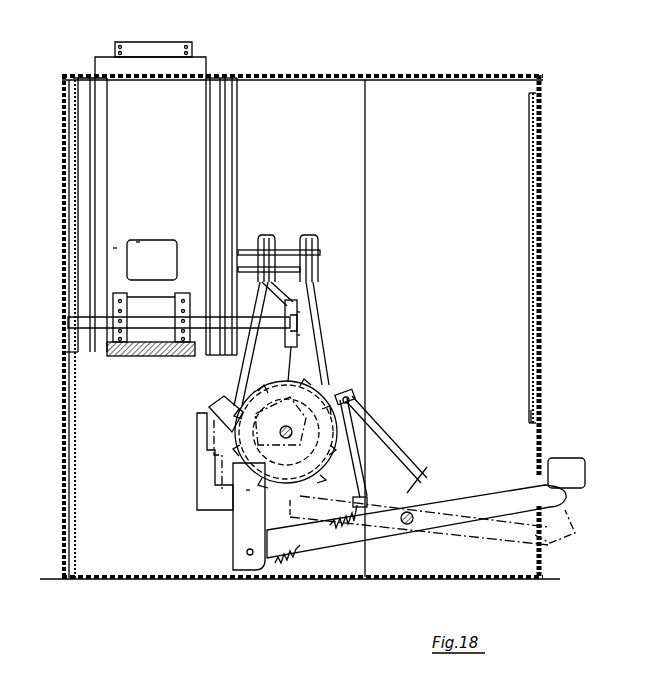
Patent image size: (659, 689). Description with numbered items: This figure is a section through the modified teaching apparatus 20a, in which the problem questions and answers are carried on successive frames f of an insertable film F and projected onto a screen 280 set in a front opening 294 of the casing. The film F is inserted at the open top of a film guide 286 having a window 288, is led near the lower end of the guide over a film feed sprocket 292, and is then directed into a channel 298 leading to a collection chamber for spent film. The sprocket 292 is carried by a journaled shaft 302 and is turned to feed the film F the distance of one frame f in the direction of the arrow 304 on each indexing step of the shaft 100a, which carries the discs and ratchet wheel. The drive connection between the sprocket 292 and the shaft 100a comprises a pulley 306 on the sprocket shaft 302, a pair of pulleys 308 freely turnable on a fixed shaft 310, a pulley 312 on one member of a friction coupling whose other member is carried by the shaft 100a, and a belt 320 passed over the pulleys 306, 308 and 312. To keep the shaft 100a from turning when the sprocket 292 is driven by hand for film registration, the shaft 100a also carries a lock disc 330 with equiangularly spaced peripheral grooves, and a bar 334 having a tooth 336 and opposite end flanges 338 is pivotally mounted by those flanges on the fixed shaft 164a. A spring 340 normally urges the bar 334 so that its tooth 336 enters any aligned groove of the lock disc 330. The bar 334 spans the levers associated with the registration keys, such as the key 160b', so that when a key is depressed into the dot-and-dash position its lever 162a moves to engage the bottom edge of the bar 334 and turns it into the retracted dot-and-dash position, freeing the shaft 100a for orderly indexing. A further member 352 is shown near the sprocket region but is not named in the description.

The modified teaching apparatus 20a is at (443, 63).
The insertable film F is at (196, 47).
The film frame f is at (136, 242).
The film guide 286 is at (168, 109).
The window 288 is at (146, 246).
The arrow 304 is at (115, 270).
The channel 298 is at (118, 350).
The film feed sprocket 292 is at (163, 337).
The fixed shaft 310 is at (284, 257).
The pulleys 308 is at (258, 243).
The pulley 306 is at (298, 335).
The belt 320 is at (322, 355).
The sprocket shaft 302 is at (254, 325).
The pulley 312 is at (278, 388).
The lock disc 330 is at (330, 388).
The shaft 100a is at (288, 438).
The hook member 352 is at (256, 470).
The bar 334 is at (346, 455).
The tooth 336 is at (350, 398).
The end flanges 338 is at (421, 474).
The lever 162a is at (474, 500).
The fixed shaft 164a is at (409, 525).
The spring 340 is at (300, 552).
The screen 280 is at (543, 288).
The front opening 294 is at (541, 413).
The registration key 160b' is at (587, 459).